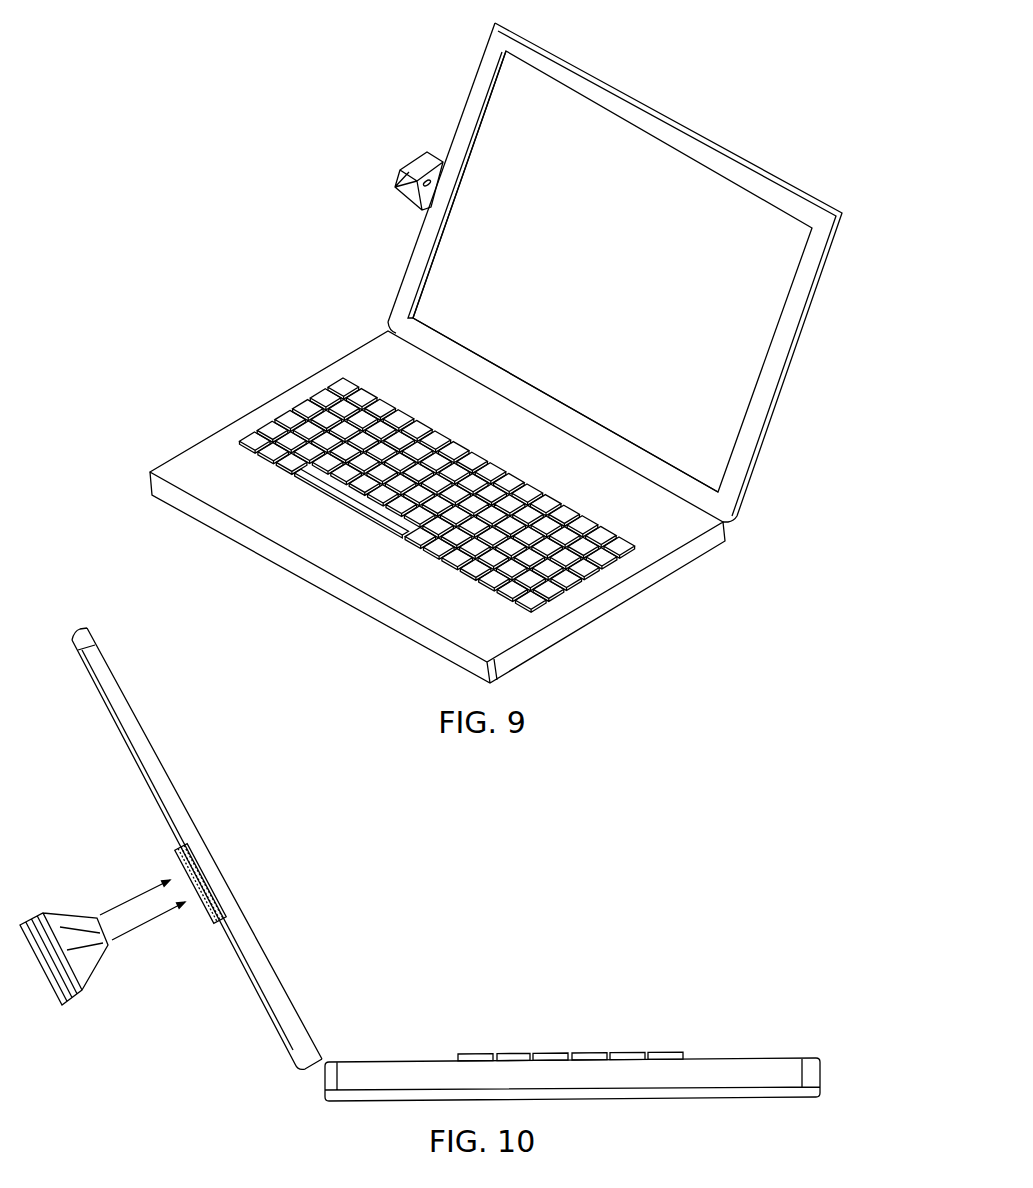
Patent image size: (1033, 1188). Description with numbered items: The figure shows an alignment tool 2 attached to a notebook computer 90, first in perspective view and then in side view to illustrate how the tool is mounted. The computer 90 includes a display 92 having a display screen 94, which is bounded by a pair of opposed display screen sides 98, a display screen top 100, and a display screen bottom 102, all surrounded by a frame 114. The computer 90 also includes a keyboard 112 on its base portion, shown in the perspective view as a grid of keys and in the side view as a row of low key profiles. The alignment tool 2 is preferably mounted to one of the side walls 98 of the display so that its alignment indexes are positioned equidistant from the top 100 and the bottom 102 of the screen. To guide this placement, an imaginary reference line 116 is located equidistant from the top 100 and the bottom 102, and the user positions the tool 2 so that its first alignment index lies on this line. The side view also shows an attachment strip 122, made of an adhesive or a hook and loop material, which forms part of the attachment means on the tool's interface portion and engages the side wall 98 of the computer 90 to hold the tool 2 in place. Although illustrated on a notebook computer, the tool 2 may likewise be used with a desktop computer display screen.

In FIG. 9, the alignment tool 2 is at (427, 152).
In FIG. 10, the alignment tool 2 is at (36, 925).
In FIG. 9, the notebook computer 90 is at (732, 592).
In FIG. 10, the notebook computer 90 is at (646, 1127).
In FIG. 9, the display 92 is at (788, 375).
In FIG. 9, the display screen 94 is at (760, 312).
In FIG. 10, the display screen 94 is at (128, 698).
In FIG. 9, the display screen sides 98 is at (423, 273).
In FIG. 9, the display screen top 100 is at (670, 145).
In FIG. 9, the display screen bottom 102 is at (652, 452).
In FIG. 9, the keyboard 112 is at (547, 588).
In FIG. 10, the keyboard 112 is at (513, 1052).
In FIG. 9, the frame 114 is at (464, 110).
In FIG. 10, the frame 114 is at (246, 932).
In FIG. 9, the imaginary reference line 116 is at (449, 190).
In FIG. 10, the imaginary reference line 116 is at (218, 870).
In FIG. 10, the attachment strip 122 is at (175, 848).